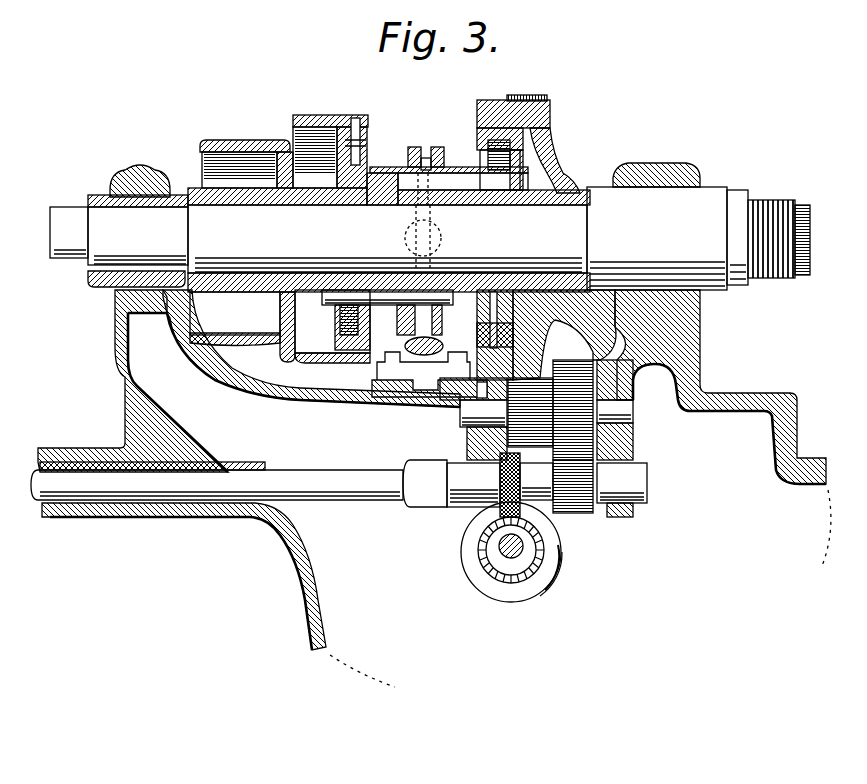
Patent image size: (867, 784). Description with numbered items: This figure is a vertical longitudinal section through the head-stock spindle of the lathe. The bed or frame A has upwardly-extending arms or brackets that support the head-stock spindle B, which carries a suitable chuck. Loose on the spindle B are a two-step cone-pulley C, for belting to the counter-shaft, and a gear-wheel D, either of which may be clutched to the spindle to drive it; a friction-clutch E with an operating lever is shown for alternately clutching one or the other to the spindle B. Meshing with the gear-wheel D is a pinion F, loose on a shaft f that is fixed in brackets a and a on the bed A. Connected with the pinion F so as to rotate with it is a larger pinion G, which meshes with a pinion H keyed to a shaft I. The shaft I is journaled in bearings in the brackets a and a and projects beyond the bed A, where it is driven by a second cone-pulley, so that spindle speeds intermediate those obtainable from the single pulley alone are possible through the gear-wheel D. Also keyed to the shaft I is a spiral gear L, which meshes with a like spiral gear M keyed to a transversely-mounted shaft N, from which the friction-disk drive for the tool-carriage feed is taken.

The bed or frame A is at (434, 425).
The head-stock spindle B is at (417, 227).
The two-step cone-pulley C is at (253, 142).
The gear-wheel D is at (527, 99).
The friction-clutch E is at (405, 165).
The pinion F is at (540, 385).
The larger pinion G is at (584, 375).
The pinion H is at (578, 508).
The shaft I is at (243, 487).
The spiral gear L is at (522, 472).
The spiral gear M is at (540, 560).
The transversely-mounted shaft N is at (497, 556).
The brackets a is at (475, 440).
The shaft f is at (462, 414).